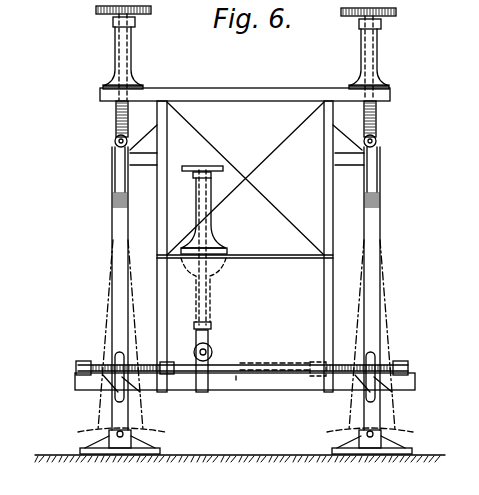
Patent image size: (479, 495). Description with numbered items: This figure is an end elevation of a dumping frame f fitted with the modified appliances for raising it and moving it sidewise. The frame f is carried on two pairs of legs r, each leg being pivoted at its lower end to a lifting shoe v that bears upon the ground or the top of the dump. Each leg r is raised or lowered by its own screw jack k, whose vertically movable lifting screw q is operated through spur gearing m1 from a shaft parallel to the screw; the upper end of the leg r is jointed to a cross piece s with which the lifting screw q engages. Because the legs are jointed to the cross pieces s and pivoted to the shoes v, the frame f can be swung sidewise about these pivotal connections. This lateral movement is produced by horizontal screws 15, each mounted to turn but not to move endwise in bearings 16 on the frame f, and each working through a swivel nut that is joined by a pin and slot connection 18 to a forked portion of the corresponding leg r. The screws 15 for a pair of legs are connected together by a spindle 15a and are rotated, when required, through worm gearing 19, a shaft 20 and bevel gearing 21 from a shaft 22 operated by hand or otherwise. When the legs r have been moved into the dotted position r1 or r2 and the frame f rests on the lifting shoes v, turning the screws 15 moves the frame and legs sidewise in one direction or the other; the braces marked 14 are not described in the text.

The screw jack k is at (115, 60).
The spur gearing m1 is at (398, 30).
The lifting screw q is at (116, 118).
The cross piece s is at (116, 144).
The leg r is at (113, 243).
The dotted position of leg r1 is at (355, 300).
The dotted position of leg r2 is at (136, 308).
The frame f is at (247, 246).
The shaft 22 is at (210, 302).
The bevel gearing 21 is at (212, 352).
The shaft 20 is at (242, 364).
The horizontal screw 15 is at (100, 364).
The spindle 15a is at (237, 377).
The bearing 16 is at (76, 368).
The pin and slot connection 18 is at (100, 384).
The worm gearing 19 is at (205, 392).
The slotted link 14 is at (130, 376).
The lifting shoe v is at (145, 444).